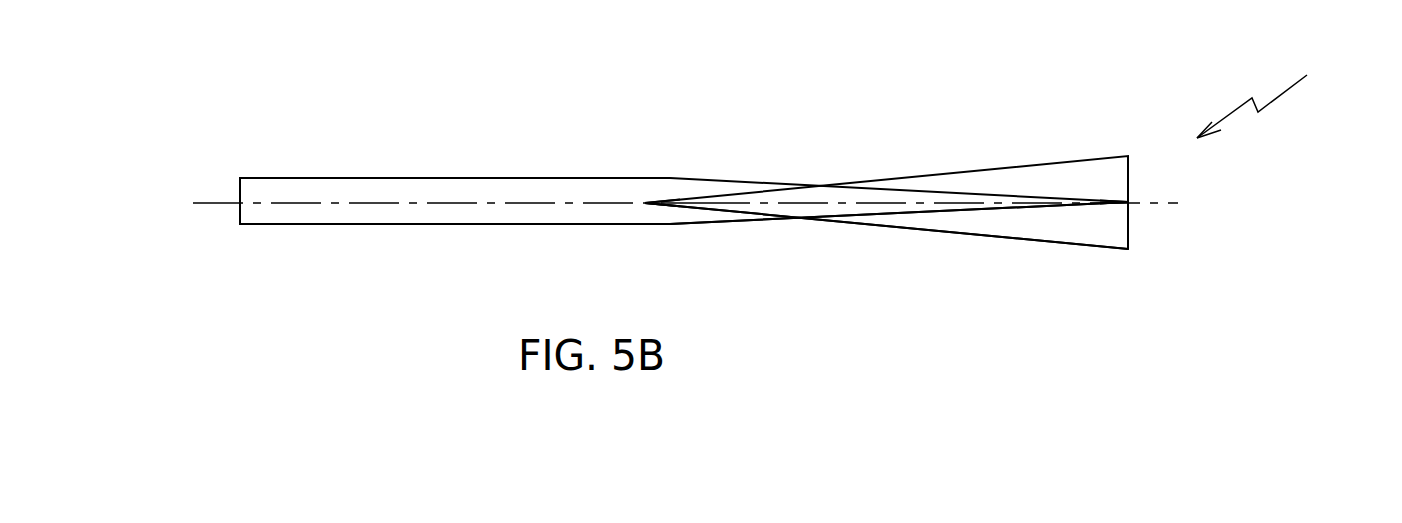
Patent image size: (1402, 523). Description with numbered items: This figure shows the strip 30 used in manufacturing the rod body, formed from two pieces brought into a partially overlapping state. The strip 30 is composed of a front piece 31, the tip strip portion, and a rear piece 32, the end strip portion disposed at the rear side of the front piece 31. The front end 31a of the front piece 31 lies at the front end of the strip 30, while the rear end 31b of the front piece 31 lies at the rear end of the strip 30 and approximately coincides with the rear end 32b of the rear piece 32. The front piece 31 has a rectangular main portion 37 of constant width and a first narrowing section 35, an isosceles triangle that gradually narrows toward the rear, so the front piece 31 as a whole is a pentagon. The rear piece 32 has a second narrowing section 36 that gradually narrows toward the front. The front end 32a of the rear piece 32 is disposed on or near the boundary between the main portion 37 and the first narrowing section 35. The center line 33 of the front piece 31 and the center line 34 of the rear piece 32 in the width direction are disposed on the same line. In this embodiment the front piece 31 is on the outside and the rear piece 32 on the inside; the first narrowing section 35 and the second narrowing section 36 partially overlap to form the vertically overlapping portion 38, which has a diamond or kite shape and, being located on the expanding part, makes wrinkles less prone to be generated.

The strip 30 is at (1272, 96).
The front piece 31 is at (332, 177).
The front end of the front piece 31a is at (238, 187).
The rear end of the front piece 31b is at (1130, 200).
The rear piece 32 is at (1035, 160).
The front end of the rear piece 32a is at (652, 202).
The rear end of the rear piece 32b is at (1130, 230).
The center line of the front piece 33 is at (215, 201).
The center line of the rear piece 34 is at (1153, 207).
The first narrowing section 35 is at (935, 211).
The second narrowing section 36 is at (1030, 238).
The main portion 37 is at (472, 177).
The vertically overlapping portion 38 is at (842, 210).